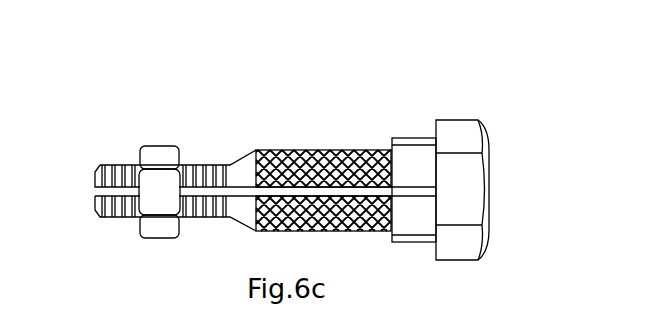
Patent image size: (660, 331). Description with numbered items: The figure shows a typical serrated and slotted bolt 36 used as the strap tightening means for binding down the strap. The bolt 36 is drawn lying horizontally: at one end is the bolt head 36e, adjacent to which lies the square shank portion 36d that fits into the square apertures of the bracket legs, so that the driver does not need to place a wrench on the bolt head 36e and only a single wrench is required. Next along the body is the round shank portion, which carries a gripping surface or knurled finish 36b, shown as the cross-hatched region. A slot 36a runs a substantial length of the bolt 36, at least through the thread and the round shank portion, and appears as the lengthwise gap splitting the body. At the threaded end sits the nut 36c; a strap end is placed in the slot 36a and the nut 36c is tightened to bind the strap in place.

The bolt 36 is at (540, 192).
The slot 36a is at (265, 190).
The knurled finish 36b is at (337, 213).
The nut 36c is at (165, 158).
The square shank portion 36d is at (407, 158).
The bolt head 36e is at (483, 120).